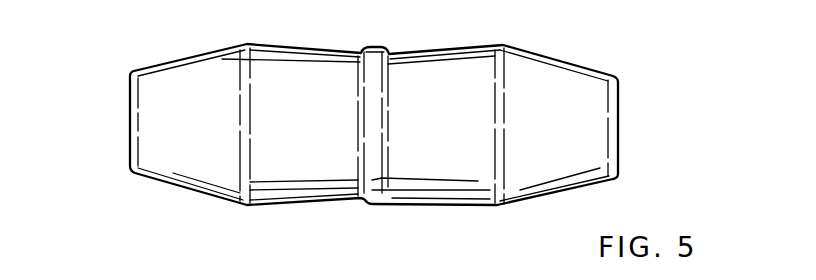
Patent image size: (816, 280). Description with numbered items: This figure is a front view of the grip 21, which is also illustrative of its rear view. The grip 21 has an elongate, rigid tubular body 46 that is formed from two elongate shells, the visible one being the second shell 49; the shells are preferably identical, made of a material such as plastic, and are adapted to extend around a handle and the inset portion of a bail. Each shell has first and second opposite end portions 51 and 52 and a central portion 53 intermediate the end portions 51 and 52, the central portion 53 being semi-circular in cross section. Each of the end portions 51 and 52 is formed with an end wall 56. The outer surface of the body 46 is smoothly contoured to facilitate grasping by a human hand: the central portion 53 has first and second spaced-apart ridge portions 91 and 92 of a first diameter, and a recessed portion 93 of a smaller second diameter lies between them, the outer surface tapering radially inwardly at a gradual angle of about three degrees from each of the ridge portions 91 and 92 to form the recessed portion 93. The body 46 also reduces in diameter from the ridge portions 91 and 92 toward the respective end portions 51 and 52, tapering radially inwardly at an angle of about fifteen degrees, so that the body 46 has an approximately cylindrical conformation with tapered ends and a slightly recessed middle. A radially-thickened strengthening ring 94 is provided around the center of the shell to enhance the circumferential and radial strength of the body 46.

The grip 21 is at (642, 74).
The elongate body 46 is at (571, 57).
The second elongate shell 49 is at (620, 140).
The first end portion 51 is at (563, 192).
The second end portion 52 is at (153, 181).
The central portion 53 is at (300, 204).
The end wall 56 is at (128, 131).
The first ridge portion 91 is at (500, 210).
The second ridge portion 92 is at (244, 210).
The recessed portion 93 is at (345, 206).
The strengthening ring 94 is at (372, 48).